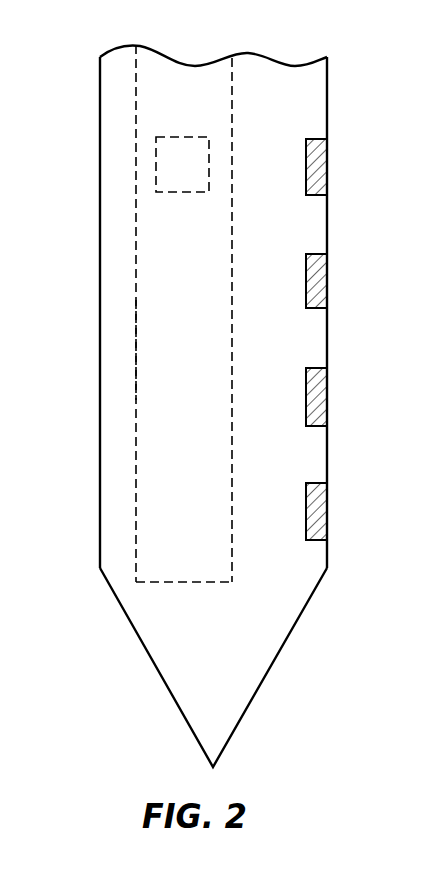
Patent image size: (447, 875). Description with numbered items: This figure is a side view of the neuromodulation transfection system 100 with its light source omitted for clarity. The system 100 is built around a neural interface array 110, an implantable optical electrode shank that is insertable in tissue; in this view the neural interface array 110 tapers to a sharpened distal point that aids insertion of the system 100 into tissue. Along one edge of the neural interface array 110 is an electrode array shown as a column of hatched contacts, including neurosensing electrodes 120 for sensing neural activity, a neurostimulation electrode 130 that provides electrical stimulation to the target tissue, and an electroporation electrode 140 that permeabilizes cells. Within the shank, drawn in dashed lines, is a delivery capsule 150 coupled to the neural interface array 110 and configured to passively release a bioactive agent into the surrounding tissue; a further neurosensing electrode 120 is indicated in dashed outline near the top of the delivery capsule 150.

The neuromodulation transfection system 100 is at (321, 645).
The neural interface array 110 is at (131, 628).
The neurosensing electrode 120 is at (185, 167).
The neurostimulation electrode 130 is at (320, 398).
The electroporation electrode 140 is at (320, 513).
The delivery capsule 150 is at (163, 351).